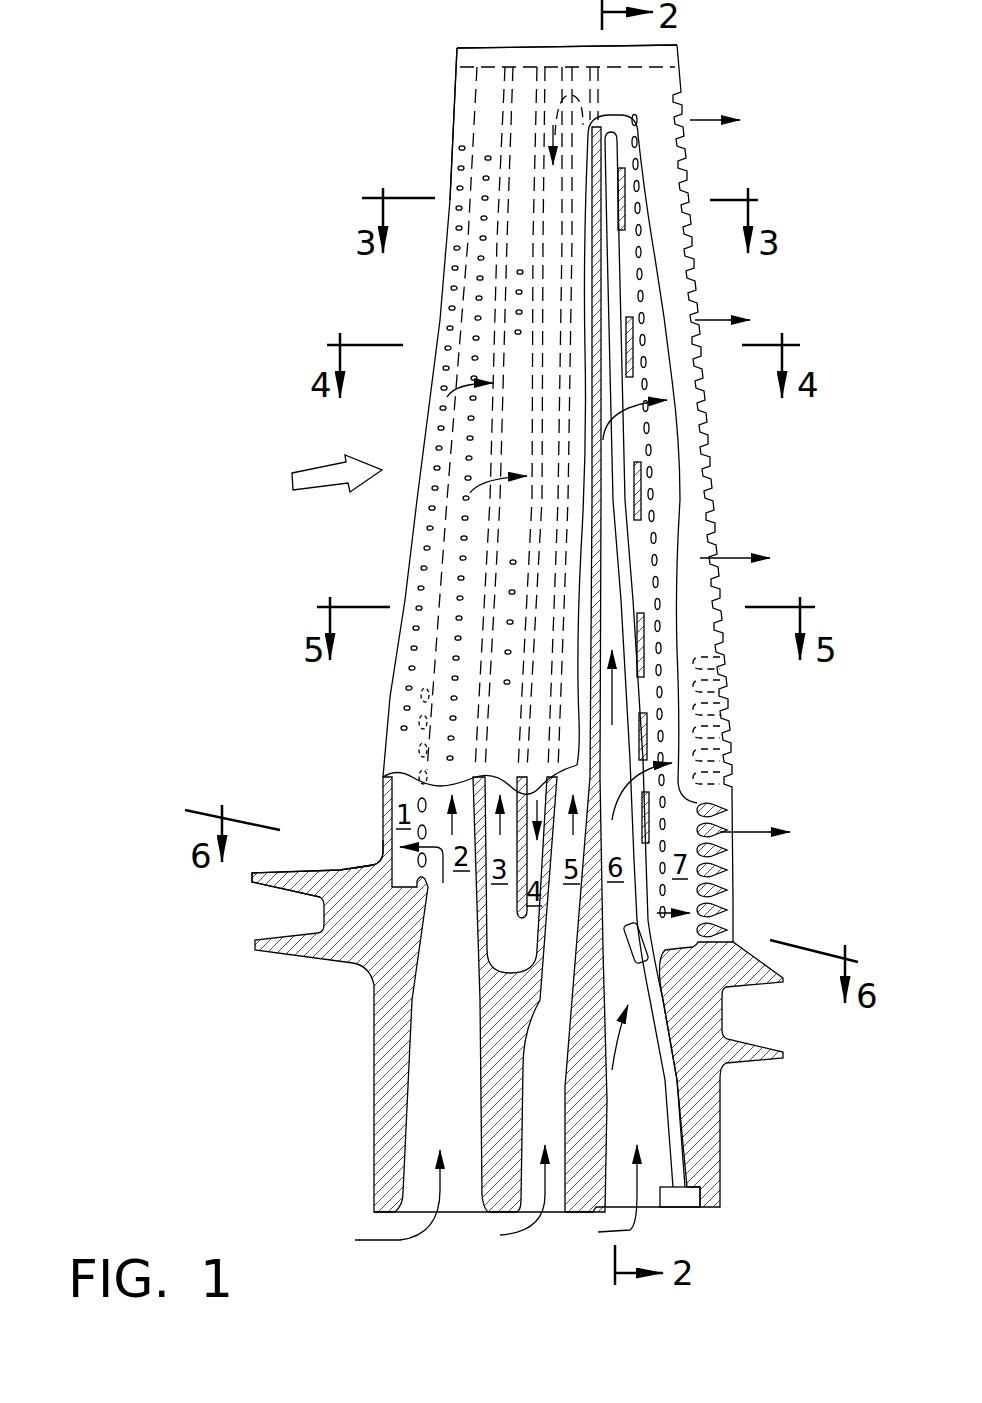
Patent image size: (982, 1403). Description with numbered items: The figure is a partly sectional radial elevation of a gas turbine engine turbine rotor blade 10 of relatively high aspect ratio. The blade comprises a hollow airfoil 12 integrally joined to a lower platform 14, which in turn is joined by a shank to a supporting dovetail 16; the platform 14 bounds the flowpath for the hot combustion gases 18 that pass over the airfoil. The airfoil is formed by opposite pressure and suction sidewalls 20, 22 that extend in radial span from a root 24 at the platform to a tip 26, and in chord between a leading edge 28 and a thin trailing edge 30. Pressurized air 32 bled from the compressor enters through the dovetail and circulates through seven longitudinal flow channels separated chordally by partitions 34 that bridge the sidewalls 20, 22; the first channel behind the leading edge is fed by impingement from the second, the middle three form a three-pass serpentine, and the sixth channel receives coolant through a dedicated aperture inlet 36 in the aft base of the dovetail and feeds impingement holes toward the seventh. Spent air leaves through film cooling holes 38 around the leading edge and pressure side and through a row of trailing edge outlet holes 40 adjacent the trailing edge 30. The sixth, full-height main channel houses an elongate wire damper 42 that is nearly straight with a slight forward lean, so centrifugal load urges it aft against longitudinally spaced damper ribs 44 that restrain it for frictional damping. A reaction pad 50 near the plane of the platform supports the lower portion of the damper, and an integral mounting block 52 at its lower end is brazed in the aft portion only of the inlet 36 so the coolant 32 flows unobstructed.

The turbine rotor blade 10 is at (733, 145).
The airfoil 12 is at (458, 100).
The platform 14 is at (343, 870).
The dovetail 16 is at (378, 1145).
The combustion gases 18 is at (310, 470).
The pressure sidewall 20 is at (520, 417).
The suction sidewall 22 is at (470, 357).
The root 24 is at (378, 858).
The tip 26 is at (483, 48).
The leading edge 28 is at (413, 530).
The trailing edge 30 is at (702, 440).
The pressurized air 32 is at (400, 1240).
The longitudinal partitions 34 is at (650, 525).
The aperture inlet 36 is at (657, 1132).
The film cooling holes 38 is at (450, 605).
The trailing edge outlet holes 40 is at (726, 585).
The wire damper 42 is at (655, 1040).
The damper ribs 44 is at (628, 190).
The reaction pad 50 is at (630, 950).
The mounting block 52 is at (690, 1210).